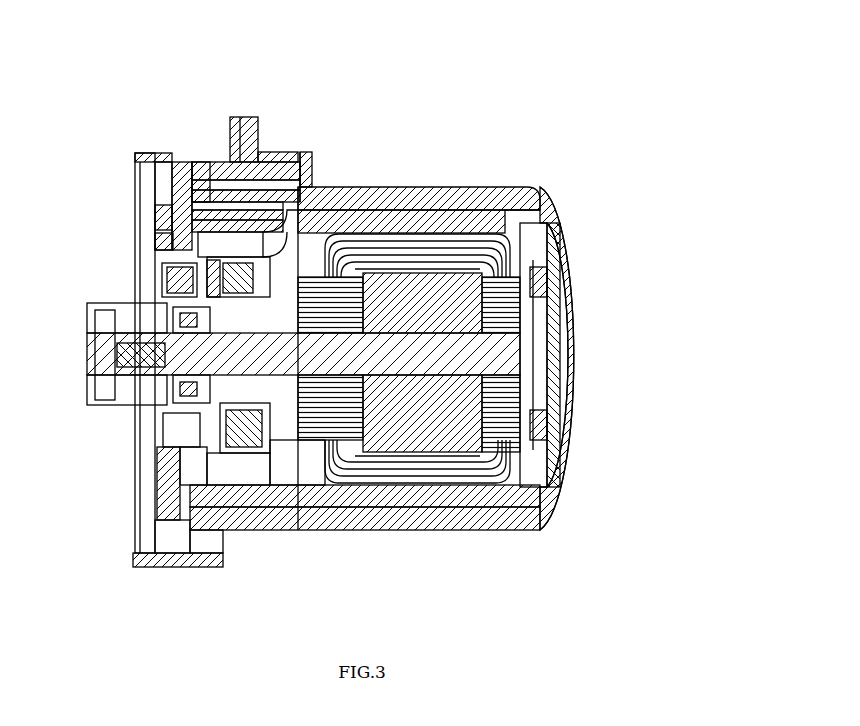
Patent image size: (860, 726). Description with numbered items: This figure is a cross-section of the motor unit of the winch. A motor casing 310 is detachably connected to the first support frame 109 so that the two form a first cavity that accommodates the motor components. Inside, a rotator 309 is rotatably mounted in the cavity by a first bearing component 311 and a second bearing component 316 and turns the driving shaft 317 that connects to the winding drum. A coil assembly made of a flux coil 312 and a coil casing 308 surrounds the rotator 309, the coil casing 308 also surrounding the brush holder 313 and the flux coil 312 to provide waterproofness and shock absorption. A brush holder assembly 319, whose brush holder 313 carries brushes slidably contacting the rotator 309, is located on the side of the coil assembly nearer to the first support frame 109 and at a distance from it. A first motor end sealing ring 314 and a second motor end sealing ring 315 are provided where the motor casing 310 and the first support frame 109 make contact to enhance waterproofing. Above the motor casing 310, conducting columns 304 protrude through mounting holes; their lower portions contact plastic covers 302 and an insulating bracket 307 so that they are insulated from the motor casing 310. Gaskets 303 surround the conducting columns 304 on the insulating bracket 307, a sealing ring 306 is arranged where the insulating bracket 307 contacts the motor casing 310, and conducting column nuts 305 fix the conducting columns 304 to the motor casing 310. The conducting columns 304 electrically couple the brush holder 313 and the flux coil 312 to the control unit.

The first support frame 109 is at (133, 200).
The plastic cover 302 is at (207, 195).
The gasket 303 is at (213, 150).
The conducting column 304 is at (240, 112).
The conducting column nut 305 is at (261, 135).
The sealing ring 306 is at (275, 173).
The insulating bracket 307 is at (310, 157).
The coil casing 308 is at (350, 220).
The rotator 309 is at (443, 293).
The motor casing 310 is at (547, 203).
The first bearing component 311 is at (565, 295).
The flux coil 312 is at (500, 487).
The brush holder 313 is at (255, 458).
The first motor end sealing ring 314 is at (200, 500).
The second motor end sealing ring 315 is at (190, 540).
The second bearing component 316 is at (187, 407).
The driving shaft 317 is at (510, 353).
The brush holder assembly 319 is at (285, 452).